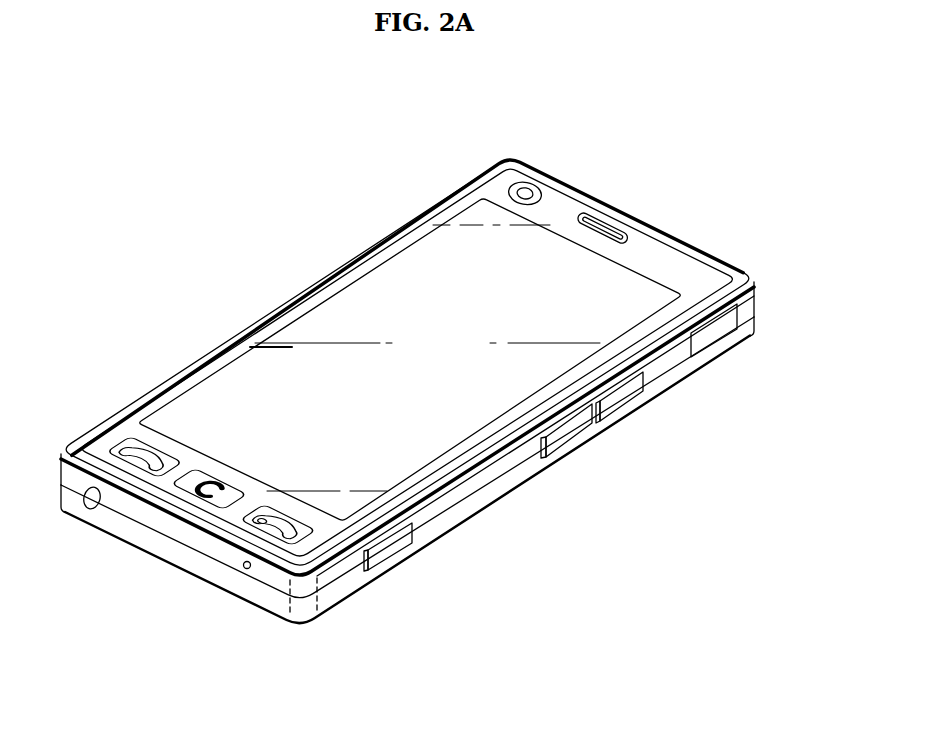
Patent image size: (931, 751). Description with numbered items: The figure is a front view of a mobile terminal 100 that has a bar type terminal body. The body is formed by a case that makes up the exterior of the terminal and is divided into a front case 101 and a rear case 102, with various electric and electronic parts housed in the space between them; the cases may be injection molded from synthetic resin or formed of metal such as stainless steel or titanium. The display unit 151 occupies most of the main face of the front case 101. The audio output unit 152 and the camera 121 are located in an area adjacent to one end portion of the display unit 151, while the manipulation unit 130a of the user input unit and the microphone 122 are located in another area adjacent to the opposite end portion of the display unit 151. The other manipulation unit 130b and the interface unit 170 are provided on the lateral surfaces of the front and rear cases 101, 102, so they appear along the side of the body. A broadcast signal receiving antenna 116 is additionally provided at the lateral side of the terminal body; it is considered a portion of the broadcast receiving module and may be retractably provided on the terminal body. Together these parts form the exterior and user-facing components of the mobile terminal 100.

The mobile terminal 100 is at (355, 205).
The front case 101 is at (748, 298).
The rear case 102 is at (752, 318).
The broadcast signal receiving antenna 116 is at (87, 501).
The camera 121 is at (527, 196).
The microphone 122 is at (247, 569).
The manipulation unit 130a is at (117, 452).
The manipulation unit 130b is at (573, 433).
The display unit 151 is at (357, 293).
The audio output unit 152 is at (600, 226).
The interface unit 170 is at (713, 337).